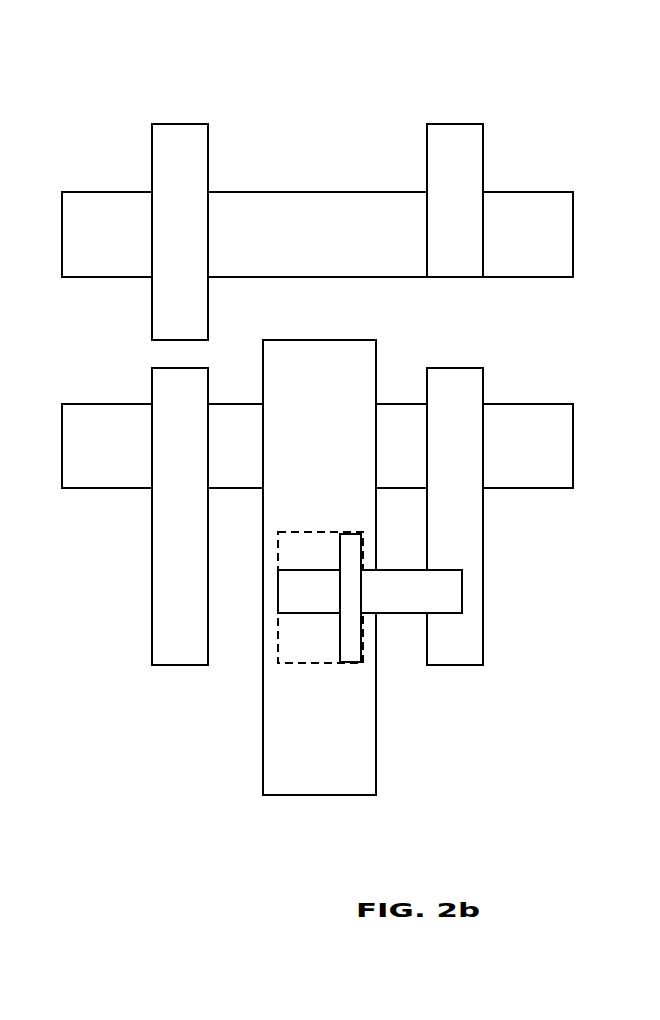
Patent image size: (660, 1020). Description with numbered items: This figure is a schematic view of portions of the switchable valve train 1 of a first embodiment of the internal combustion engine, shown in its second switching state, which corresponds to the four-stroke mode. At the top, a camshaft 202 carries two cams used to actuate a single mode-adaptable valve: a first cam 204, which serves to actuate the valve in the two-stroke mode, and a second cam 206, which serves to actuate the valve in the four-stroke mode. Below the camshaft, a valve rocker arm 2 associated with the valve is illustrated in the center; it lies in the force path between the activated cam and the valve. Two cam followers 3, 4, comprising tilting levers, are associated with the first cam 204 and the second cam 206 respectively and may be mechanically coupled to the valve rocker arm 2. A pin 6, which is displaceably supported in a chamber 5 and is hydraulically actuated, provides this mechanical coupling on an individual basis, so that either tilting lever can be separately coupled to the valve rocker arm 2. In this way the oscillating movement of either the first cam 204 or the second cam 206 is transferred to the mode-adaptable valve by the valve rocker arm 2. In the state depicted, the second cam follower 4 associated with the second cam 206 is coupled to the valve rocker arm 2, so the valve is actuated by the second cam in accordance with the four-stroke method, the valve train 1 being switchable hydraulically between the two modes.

The switchable valve train 1 is at (66, 369).
The valve rocker arm 2 is at (355, 795).
The first cam follower 3 is at (188, 666).
The second cam follower 4 is at (445, 665).
The chamber 5 is at (278, 634).
The pin 6 is at (462, 597).
The camshaft 202 is at (573, 227).
The first cam 204 is at (209, 158).
The second cam 206 is at (483, 163).